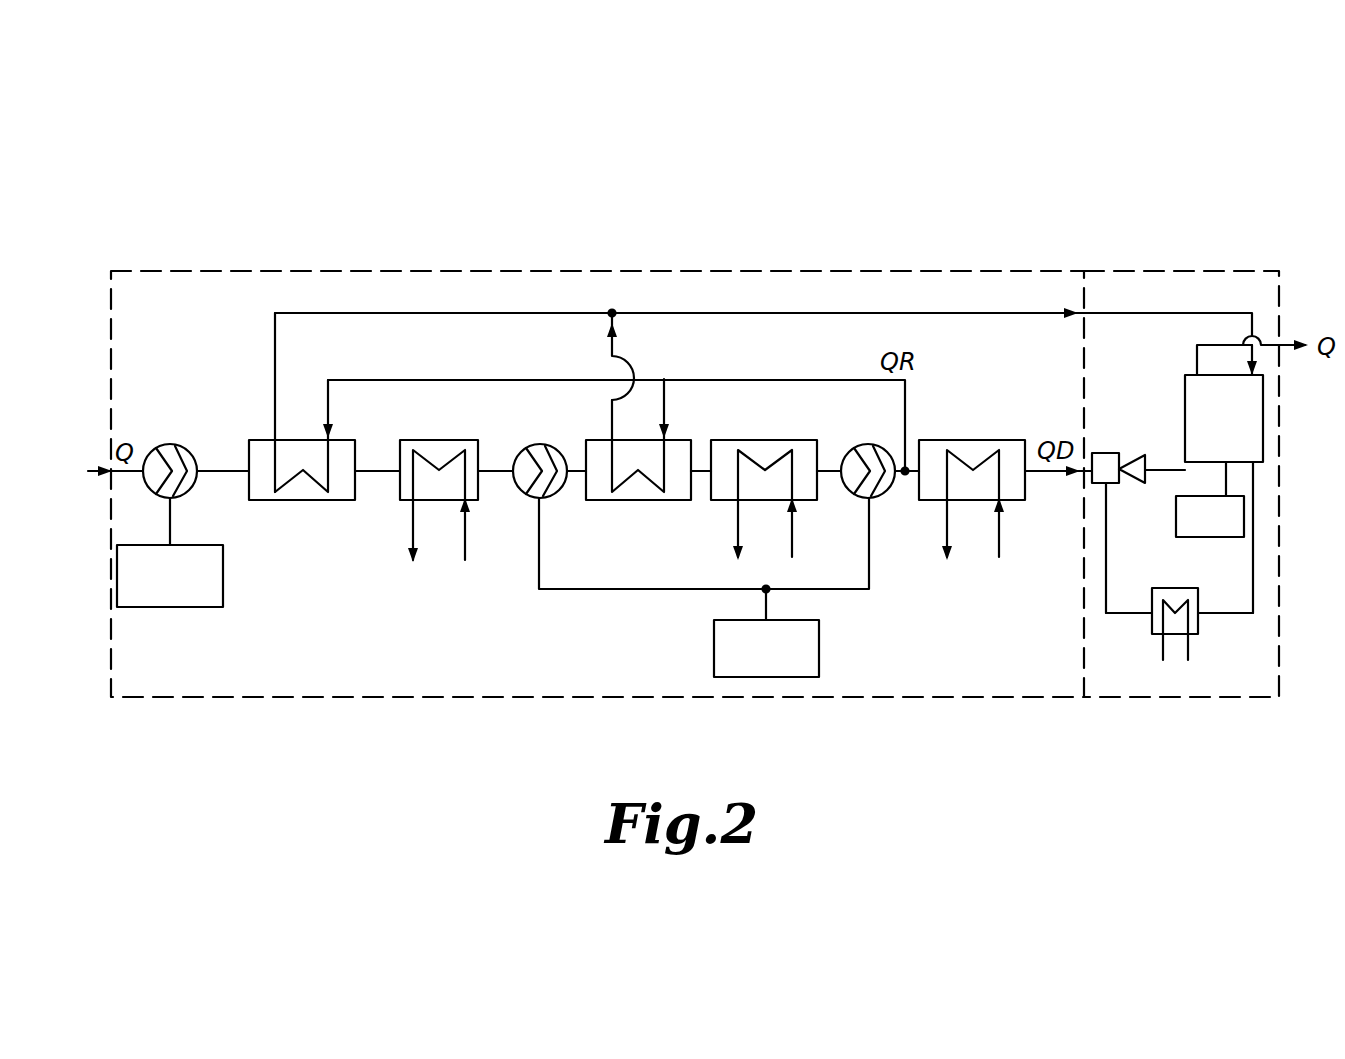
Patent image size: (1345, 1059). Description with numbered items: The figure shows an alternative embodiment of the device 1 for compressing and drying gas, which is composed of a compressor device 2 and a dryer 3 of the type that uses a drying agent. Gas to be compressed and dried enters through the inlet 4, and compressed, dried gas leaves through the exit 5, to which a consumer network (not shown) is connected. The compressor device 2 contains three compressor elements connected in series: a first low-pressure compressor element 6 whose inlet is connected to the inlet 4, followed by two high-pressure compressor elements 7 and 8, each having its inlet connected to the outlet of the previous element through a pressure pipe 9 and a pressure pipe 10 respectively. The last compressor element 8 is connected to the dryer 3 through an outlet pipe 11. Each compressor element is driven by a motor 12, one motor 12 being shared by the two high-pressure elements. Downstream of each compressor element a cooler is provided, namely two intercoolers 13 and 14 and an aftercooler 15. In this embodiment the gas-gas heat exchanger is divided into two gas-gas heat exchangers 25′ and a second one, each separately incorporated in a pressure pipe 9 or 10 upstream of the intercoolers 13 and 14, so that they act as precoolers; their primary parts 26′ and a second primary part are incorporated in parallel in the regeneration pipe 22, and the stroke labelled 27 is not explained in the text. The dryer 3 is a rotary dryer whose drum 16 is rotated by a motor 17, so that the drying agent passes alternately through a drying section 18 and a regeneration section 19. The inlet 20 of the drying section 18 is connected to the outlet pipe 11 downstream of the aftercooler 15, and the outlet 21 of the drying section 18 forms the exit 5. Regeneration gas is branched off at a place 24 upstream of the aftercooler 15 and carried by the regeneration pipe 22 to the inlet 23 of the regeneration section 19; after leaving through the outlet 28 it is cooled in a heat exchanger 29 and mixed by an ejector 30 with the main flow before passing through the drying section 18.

The device 1 is at (1243, 178).
The compressor device 2 is at (177, 271).
The dryer 3 is at (1280, 272).
The inlet 4 is at (105, 472).
The exit 5 is at (1275, 331).
The compressor element 6 is at (167, 458).
The compressor element 7 is at (522, 466).
The compressor element 8 is at (870, 446).
The pressure pipe 9 is at (378, 468).
The pressure pipe 10 is at (828, 468).
The outlet pipe 11 is at (1043, 473).
The motor 12 is at (180, 582).
The intercooler 13 is at (440, 440).
The intercooler 14 is at (768, 438).
The aftercooler 15 is at (978, 438).
The drum 16 is at (1264, 440).
The motor 17 is at (1208, 527).
The drying section 18 is at (1203, 400).
The regeneration section 19 is at (1245, 440).
The inlet 20 is at (1173, 467).
The outlet 21 is at (1202, 343).
The regeneration pipe 22 is at (1031, 311).
The inlet 23 is at (1254, 358).
The place 24 is at (905, 480).
The gas-gas heat exchanger 25′ is at (265, 440).
The primary part 26′ is at (310, 500).
The feed pipe 27 is at (262, 490).
The outlet 28 is at (1253, 533).
The heat exchanger 29 is at (1198, 620).
The ejector 30 is at (1105, 452).